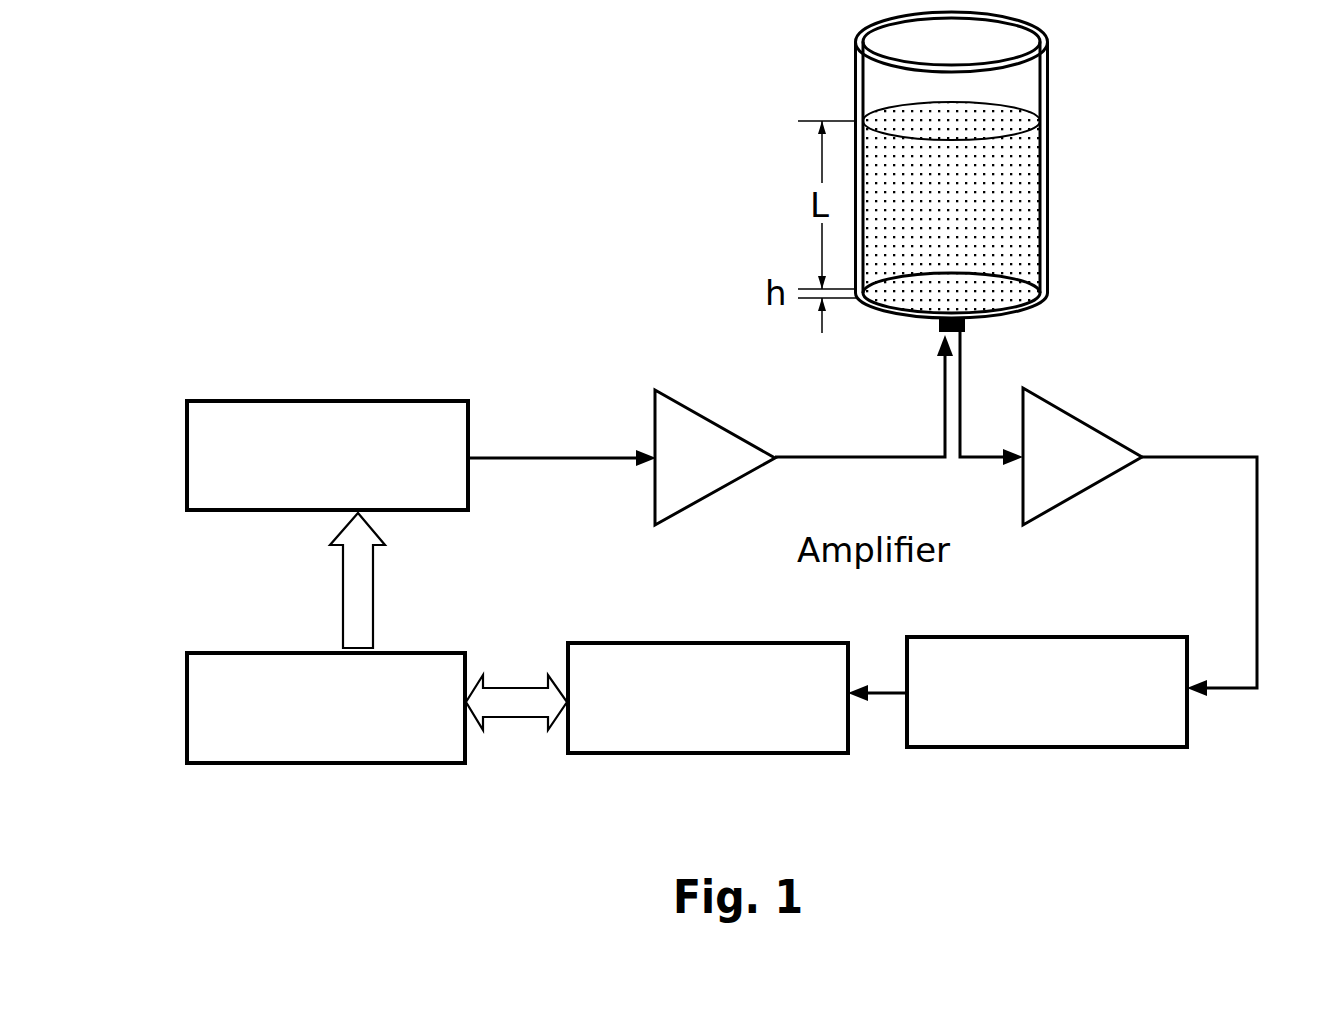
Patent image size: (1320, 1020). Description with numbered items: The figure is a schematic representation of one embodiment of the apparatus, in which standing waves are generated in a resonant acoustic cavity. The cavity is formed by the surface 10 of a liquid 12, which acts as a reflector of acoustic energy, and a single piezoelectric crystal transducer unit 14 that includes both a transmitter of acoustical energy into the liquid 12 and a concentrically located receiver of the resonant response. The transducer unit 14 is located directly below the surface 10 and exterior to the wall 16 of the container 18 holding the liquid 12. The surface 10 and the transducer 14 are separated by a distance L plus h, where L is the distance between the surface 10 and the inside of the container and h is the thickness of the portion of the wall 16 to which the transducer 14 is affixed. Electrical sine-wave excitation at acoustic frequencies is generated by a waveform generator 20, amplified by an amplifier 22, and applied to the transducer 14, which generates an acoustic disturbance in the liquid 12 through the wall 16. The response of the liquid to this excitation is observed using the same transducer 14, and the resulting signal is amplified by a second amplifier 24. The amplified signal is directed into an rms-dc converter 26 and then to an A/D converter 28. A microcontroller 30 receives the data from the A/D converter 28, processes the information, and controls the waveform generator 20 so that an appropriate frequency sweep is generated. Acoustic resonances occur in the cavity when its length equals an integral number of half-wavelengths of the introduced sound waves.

The surface 10 is at (977, 127).
The liquid 12 is at (995, 202).
The piezoelectric crystal transducer unit 14 is at (922, 331).
The wall 16 is at (977, 288).
The container 18 is at (840, 73).
The waveform generator 20 is at (428, 498).
The amplifier 22 is at (785, 548).
The amplifier 24 is at (967, 557).
The rms-dc converter 26 is at (1147, 732).
The A/D converter 28 is at (808, 738).
The microcontroller 30 is at (423, 748).